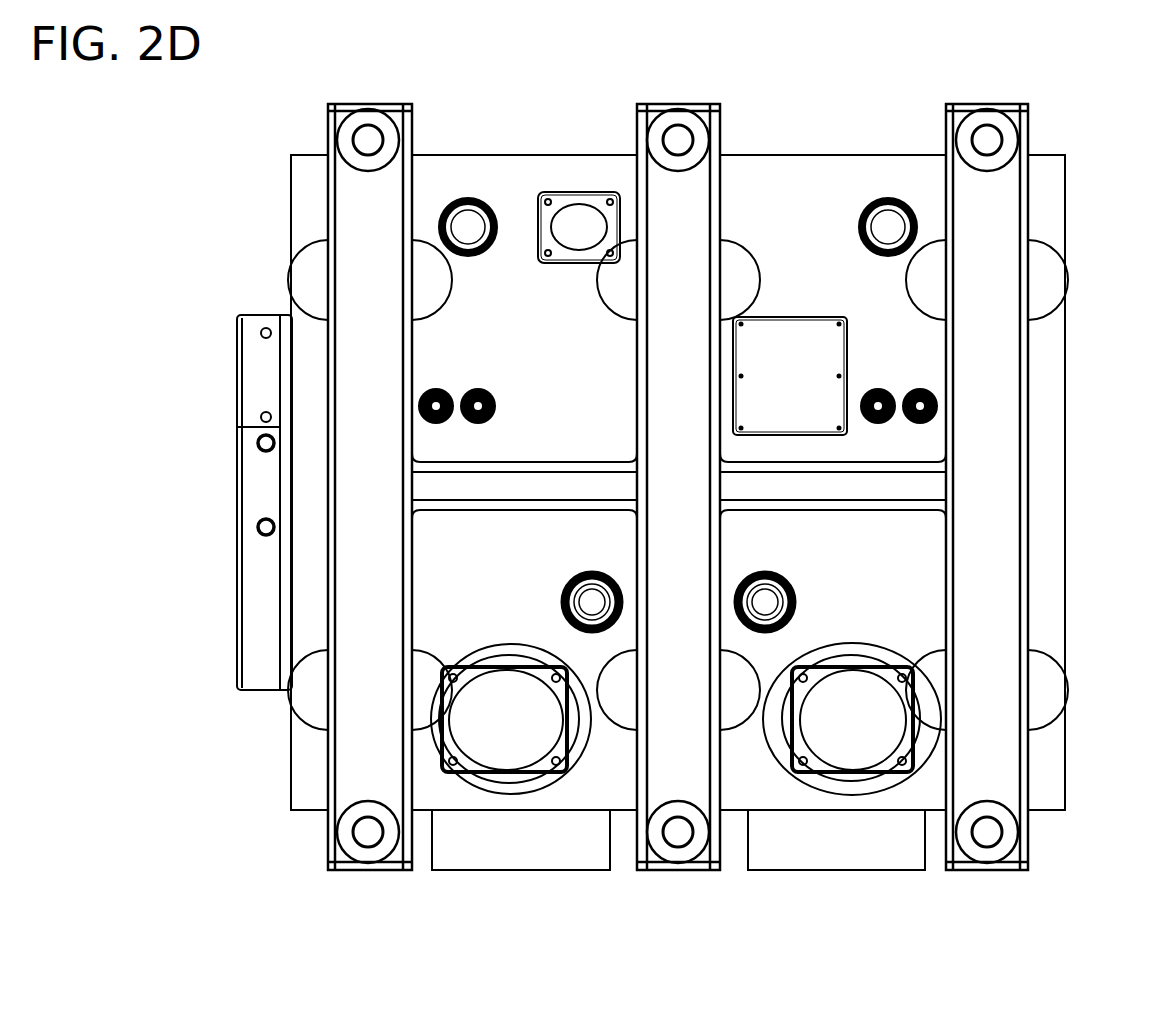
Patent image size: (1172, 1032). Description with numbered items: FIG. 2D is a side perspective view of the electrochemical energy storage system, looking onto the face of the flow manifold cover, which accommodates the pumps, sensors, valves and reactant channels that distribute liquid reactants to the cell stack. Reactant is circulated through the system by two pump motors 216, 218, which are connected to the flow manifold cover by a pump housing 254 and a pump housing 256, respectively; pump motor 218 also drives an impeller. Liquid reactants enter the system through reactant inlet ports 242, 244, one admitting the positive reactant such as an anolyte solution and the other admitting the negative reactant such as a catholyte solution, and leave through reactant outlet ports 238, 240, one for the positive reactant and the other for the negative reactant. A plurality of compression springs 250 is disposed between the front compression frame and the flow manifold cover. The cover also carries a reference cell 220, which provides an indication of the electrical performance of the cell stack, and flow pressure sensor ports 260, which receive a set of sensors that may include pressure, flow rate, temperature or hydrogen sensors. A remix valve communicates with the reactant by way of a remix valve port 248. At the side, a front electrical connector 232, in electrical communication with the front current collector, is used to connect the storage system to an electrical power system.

The pump motor 216 is at (509, 719).
The pump motor 218 is at (851, 718).
The reference cell 220 is at (790, 376).
The front electrical connector 232 is at (235, 370).
The reactant outlet port 238 is at (468, 197).
The reactant outlet port 240 is at (888, 197).
The reactant inlet port 242 is at (578, 573).
The reactant inlet port 244 is at (780, 573).
The remix valve port 248 is at (538, 236).
The compression springs 250 is at (322, 250).
The pump housing 254 is at (540, 790).
The pump housing 256 is at (860, 790).
The flow pressure sensor ports 260 is at (497, 398).